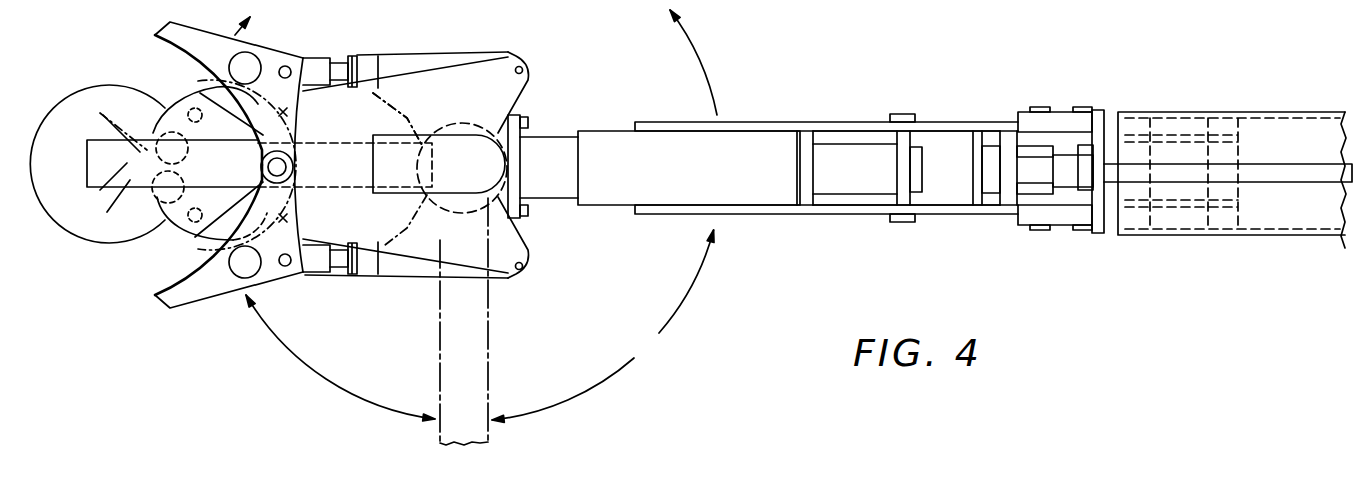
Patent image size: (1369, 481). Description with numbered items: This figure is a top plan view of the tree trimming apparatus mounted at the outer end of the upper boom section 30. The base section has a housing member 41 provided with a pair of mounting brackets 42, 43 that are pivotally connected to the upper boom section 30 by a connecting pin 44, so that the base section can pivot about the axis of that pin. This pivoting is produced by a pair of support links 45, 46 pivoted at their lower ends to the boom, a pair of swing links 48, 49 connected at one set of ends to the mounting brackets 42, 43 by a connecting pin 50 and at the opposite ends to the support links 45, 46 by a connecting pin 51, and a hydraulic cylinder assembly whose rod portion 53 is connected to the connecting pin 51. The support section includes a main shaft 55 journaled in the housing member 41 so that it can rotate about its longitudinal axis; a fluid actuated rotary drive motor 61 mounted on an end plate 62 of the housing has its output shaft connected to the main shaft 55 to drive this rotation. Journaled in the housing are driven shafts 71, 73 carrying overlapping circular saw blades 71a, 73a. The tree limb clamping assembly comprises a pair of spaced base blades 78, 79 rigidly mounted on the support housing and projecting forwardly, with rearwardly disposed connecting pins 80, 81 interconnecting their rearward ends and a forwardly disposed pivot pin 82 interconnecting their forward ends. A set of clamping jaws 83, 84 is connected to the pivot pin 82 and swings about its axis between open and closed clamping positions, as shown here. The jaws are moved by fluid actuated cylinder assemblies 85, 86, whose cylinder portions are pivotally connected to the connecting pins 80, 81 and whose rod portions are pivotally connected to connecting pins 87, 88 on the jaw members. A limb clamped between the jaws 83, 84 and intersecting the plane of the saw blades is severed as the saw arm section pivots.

The upper boom section 30 is at (1293, 113).
The housing member 41 is at (765, 140).
The mounting bracket 42 is at (851, 125).
The mounting bracket 43 is at (773, 218).
The connecting pin 44 is at (982, 185).
The support link 45 is at (1048, 112).
The support link 46 is at (1060, 233).
The swing link 48 is at (985, 121).
The swing link 49 is at (1000, 227).
The connecting pin 50 is at (893, 187).
The connecting pin 51 is at (1052, 177).
The rod portion 53 is at (1262, 184).
The main shaft 55 is at (555, 136).
The rotary drive motor 61 is at (872, 145).
The end plate 62 is at (798, 168).
The driven shaft 71 is at (112, 4).
The circular saw blade 71a is at (110, 244).
The driven shaft 73 is at (360, 9).
The circular saw blade 73a is at (418, 2).
The base blade 78 is at (503, 97).
The base blade 79 is at (507, 242).
The connecting pin 80 is at (523, 72).
The connecting pin 81 is at (522, 272).
The pivot pin 82 is at (293, 167).
The clamping jaw 83 is at (200, 57).
The clamping jaw 84 is at (208, 300).
The fluid actuated cylinder assembly 85 is at (397, 53).
The fluid actuated cylinder assembly 86 is at (402, 278).
The connecting pin 87 is at (287, 65).
The connecting pin 88 is at (287, 266).